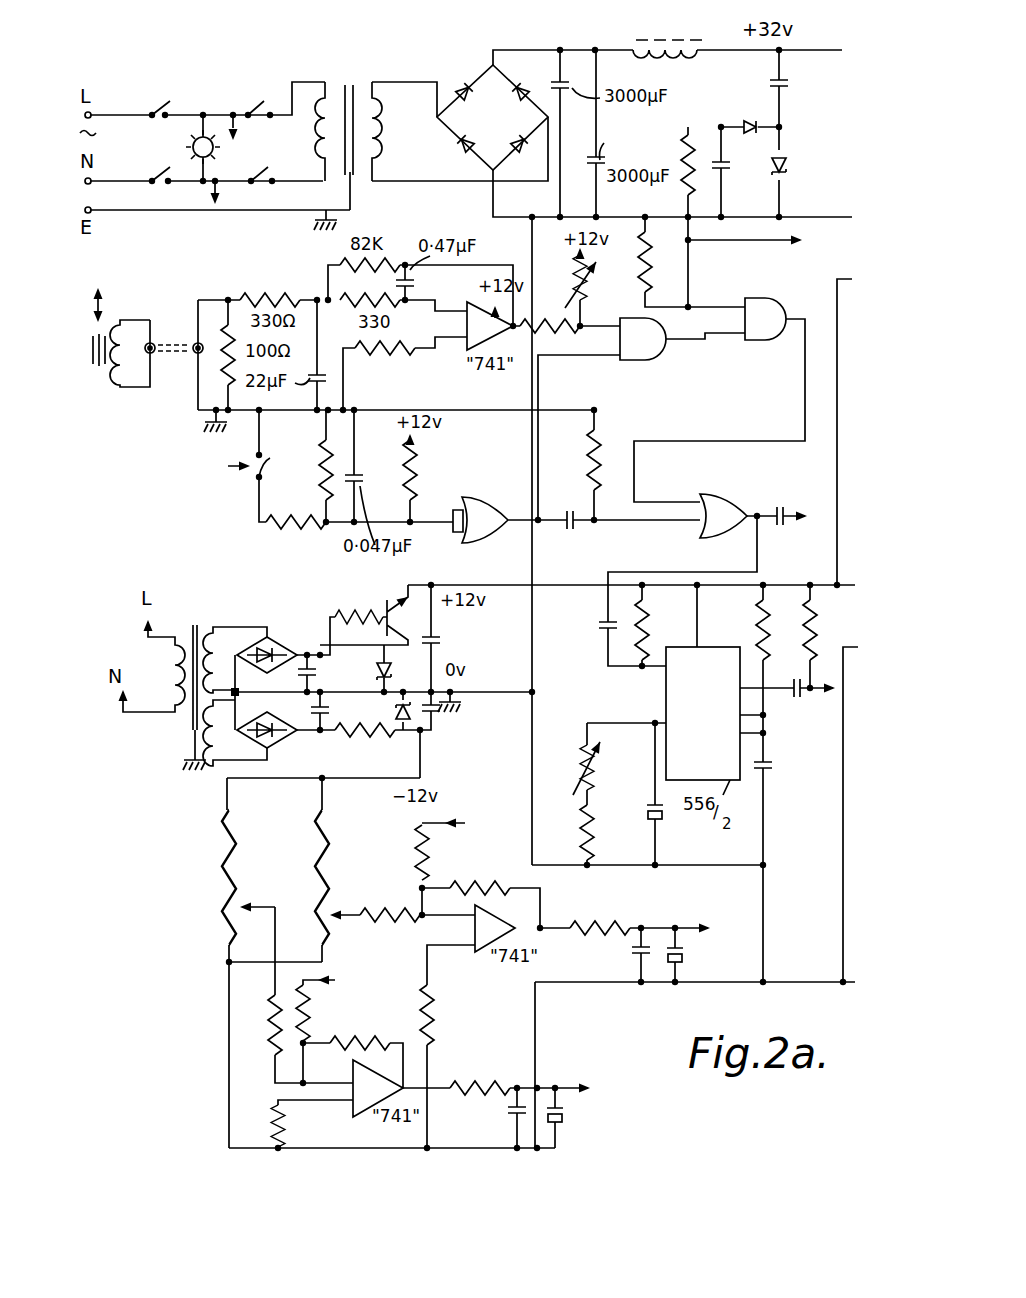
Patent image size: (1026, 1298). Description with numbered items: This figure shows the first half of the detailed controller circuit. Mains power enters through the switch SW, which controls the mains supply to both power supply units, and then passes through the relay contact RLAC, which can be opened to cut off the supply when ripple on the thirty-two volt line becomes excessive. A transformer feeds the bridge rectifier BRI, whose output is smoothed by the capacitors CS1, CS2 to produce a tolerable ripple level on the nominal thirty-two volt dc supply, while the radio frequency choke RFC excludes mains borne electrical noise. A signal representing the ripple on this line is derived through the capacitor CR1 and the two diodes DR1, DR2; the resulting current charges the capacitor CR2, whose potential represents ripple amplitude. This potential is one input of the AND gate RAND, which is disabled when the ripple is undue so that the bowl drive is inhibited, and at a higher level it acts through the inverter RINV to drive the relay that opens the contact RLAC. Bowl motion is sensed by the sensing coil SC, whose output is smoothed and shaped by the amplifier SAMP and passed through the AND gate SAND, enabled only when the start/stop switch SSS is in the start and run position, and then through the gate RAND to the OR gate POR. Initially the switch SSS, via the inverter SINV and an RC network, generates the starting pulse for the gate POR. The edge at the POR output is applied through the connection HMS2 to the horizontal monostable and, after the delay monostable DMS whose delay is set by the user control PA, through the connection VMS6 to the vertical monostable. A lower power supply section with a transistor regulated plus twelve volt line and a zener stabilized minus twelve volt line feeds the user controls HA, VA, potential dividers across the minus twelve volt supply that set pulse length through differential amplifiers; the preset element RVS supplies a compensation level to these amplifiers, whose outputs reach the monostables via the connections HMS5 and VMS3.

The switch SW is at (149, 142).
The relay contact RLAC is at (261, 142).
The bridge rectifier BRI is at (502, 129).
The smoothing capacitor CS1 is at (553, 87).
The smoothing capacitor CS2 is at (614, 133).
The radio frequency choke RFC is at (665, 31).
The diode DR1 is at (742, 120).
The diode DR2 is at (785, 171).
The capacitor CR1 is at (788, 94).
The capacitor CR2 is at (725, 170).
The sensing coil SC is at (148, 337).
The integrated circuit amplifier SAMP is at (469, 328).
The first AND gate SAND is at (620, 347).
The second AND gate RAND is at (745, 320).
The inverter RINV is at (758, 254).
The start/stop switch SSS is at (268, 466).
The inverter SINV is at (482, 497).
The OR gate POR is at (726, 484).
The horizontal monostable trigger connection HMS2 is at (818, 522).
The delay monostable DMS is at (712, 764).
The user control potential divider PA is at (600, 794).
The vertical monostable trigger connection VMS6 is at (843, 691).
The horizontal monostable control connection HMS5 is at (634, 931).
The vertical amplitude user-operated control VA is at (226, 924).
The horizontal amplitude user-operated control HA is at (333, 916).
The preset adjustable element RVS is at (403, 901).
The vertical monostable control connection VMS3 is at (526, 1112).